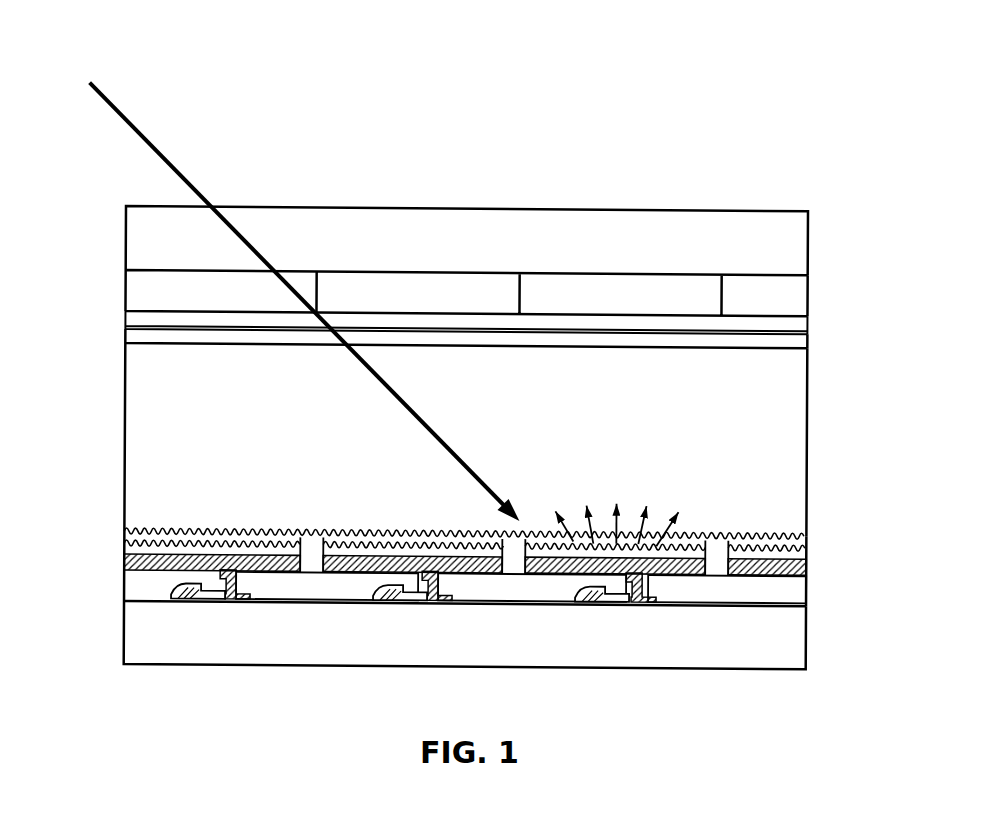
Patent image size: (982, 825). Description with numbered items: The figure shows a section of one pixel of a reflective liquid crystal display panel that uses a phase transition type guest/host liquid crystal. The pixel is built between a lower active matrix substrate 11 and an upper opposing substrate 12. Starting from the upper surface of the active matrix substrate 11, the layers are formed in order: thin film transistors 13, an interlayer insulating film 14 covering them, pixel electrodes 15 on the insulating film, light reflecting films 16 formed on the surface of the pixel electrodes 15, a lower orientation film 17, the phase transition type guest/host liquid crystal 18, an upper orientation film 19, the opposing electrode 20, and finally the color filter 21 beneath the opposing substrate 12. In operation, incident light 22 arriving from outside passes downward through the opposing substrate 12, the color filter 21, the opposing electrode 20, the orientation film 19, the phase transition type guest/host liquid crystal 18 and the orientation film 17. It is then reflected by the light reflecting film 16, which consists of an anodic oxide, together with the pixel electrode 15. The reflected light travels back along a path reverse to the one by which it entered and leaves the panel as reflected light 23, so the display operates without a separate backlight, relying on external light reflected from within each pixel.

The active matrix substrate 11 is at (137, 632).
The opposing substrate 12 is at (732, 223).
The thin film transistors 13 is at (615, 607).
The interlayer insulating film 14 is at (793, 600).
The pixel electrodes 15 is at (802, 568).
The light reflecting films 16 is at (792, 537).
The orientation film 17 is at (720, 535).
The phase transition type guest/host liquid crystal 18 is at (797, 420).
The orientation film 19 is at (797, 342).
The opposing electrode 20 is at (797, 325).
The color filter 21 is at (655, 285).
The incident light 22 is at (150, 140).
The reflected light 23 is at (612, 527).